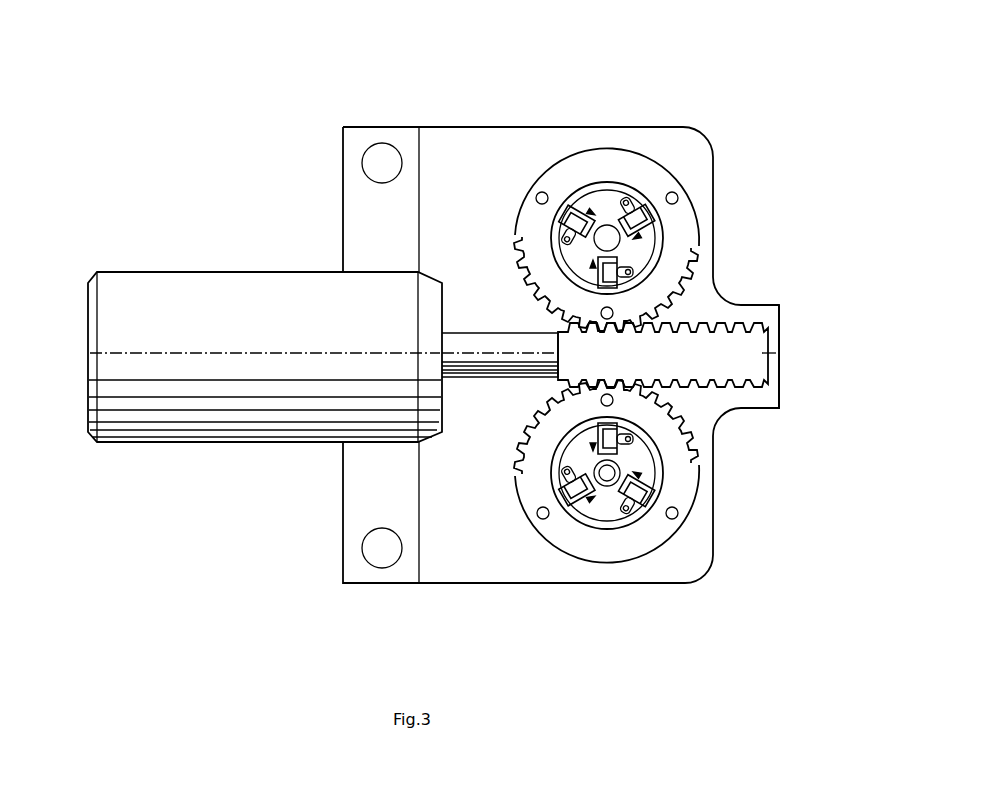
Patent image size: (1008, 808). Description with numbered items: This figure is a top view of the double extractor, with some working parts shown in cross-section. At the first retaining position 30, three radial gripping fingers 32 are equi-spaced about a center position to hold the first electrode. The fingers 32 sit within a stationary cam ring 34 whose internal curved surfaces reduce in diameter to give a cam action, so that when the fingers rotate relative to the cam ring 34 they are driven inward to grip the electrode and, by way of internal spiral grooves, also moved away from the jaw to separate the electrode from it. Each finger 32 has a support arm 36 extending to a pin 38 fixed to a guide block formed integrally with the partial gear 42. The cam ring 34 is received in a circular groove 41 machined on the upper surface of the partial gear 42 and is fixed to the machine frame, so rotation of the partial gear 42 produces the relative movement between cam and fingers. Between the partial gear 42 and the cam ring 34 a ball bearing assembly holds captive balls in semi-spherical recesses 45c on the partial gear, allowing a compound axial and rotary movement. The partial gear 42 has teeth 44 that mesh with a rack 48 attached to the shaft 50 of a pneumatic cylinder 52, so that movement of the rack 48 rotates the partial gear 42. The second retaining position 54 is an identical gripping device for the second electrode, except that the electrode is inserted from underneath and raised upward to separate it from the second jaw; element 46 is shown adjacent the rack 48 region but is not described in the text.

The first retaining position 30 is at (610, 487).
The radial gripping fingers 32 is at (573, 200).
The stationary cam ring 34 is at (660, 224).
The support arms 36 is at (562, 231).
The pins 38 is at (560, 236).
The circular groove 41 is at (667, 245).
The partial gear 42 is at (590, 148).
The teeth 44 is at (695, 273).
The semi-spherical recesses 45c is at (542, 192).
The slot 46 is at (748, 388).
The rack 48 is at (776, 353).
The shaft 50 is at (508, 333).
The pneumatic cylinder 52 is at (230, 280).
The second retaining position 54 is at (606, 236).